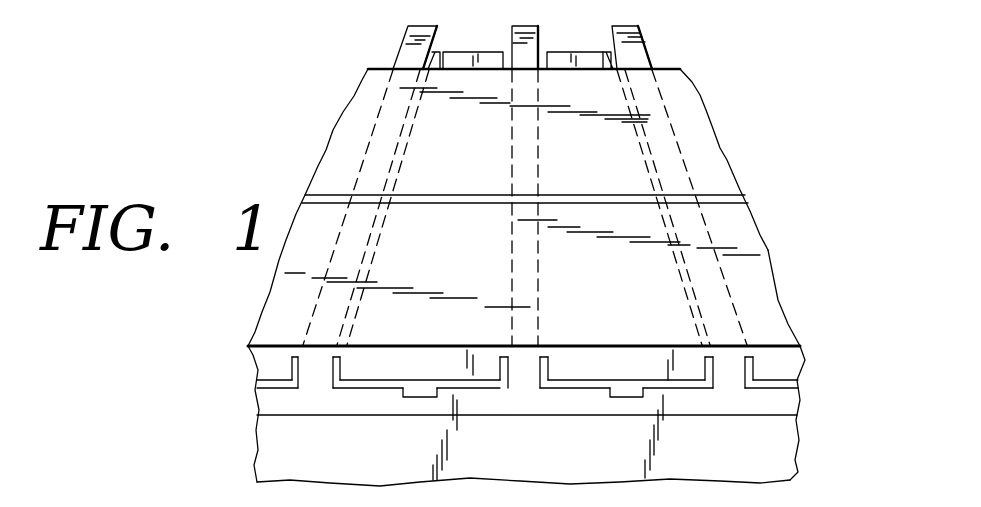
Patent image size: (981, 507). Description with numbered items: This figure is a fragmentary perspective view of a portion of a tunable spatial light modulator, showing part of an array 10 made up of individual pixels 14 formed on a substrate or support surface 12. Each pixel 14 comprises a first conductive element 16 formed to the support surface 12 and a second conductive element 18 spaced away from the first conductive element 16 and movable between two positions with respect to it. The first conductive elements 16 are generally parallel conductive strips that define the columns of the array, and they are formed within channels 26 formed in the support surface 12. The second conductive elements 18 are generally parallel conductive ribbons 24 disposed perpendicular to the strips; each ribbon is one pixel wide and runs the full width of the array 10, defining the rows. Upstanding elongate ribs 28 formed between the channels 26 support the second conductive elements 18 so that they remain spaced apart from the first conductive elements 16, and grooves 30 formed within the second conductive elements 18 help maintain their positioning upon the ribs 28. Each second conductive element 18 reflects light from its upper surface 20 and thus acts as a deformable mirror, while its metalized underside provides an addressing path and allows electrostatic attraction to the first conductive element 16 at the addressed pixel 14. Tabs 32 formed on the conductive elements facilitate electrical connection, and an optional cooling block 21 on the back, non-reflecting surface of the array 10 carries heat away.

The array 10 is at (300, 138).
The substrate or support surface 12 is at (797, 398).
The pixels 14 is at (473, 146).
The first conductive element 16 is at (476, 58).
The second conductive element 18 is at (376, 88).
The upper surface 20 is at (637, 337).
The cooling block 21 is at (256, 454).
The conductive ribbons 24 is at (702, 102).
The channels 26 is at (300, 368).
The upstanding elongate ribs 28 is at (420, 25).
The grooves 30 is at (300, 374).
The tabs 32 is at (392, 398).